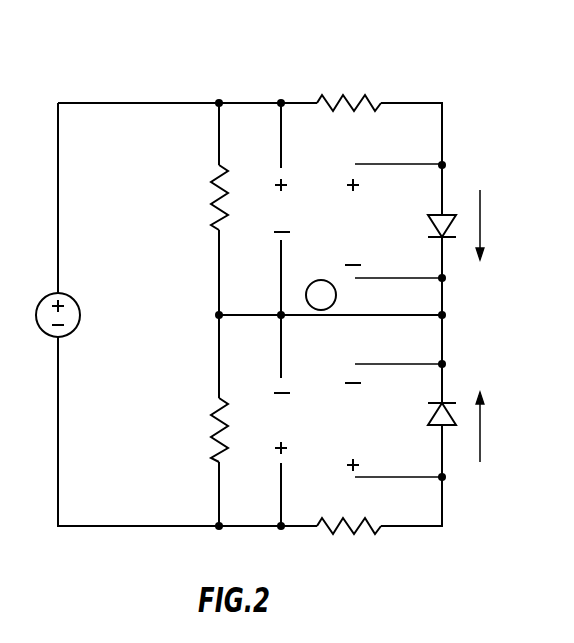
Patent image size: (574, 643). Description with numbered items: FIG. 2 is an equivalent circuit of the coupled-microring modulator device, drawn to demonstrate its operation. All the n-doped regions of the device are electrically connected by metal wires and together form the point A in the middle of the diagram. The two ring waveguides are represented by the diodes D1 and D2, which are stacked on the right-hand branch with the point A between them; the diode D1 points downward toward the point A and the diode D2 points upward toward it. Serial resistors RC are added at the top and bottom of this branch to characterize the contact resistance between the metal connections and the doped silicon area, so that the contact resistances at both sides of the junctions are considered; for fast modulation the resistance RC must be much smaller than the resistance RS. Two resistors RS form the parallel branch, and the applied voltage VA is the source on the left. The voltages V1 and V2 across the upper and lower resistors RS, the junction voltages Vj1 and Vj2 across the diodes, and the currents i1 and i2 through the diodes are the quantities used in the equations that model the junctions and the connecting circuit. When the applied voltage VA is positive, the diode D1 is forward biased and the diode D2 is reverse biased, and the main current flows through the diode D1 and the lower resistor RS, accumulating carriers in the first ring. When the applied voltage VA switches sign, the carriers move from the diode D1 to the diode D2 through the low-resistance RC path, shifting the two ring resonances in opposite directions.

The serial resistor RC is at (349, 316).
The resistor RS is at (202, 313).
The applied voltage VA is at (73, 309).
The voltage V1 is at (280, 205).
The voltage V2 is at (280, 423).
The junction voltage Vj1 is at (393, 221).
The junction voltage Vj2 is at (393, 420).
The diode D1 is at (427, 221).
The diode D2 is at (427, 410).
The current i1 is at (490, 225).
The current i2 is at (490, 427).
The point A is at (321, 295).